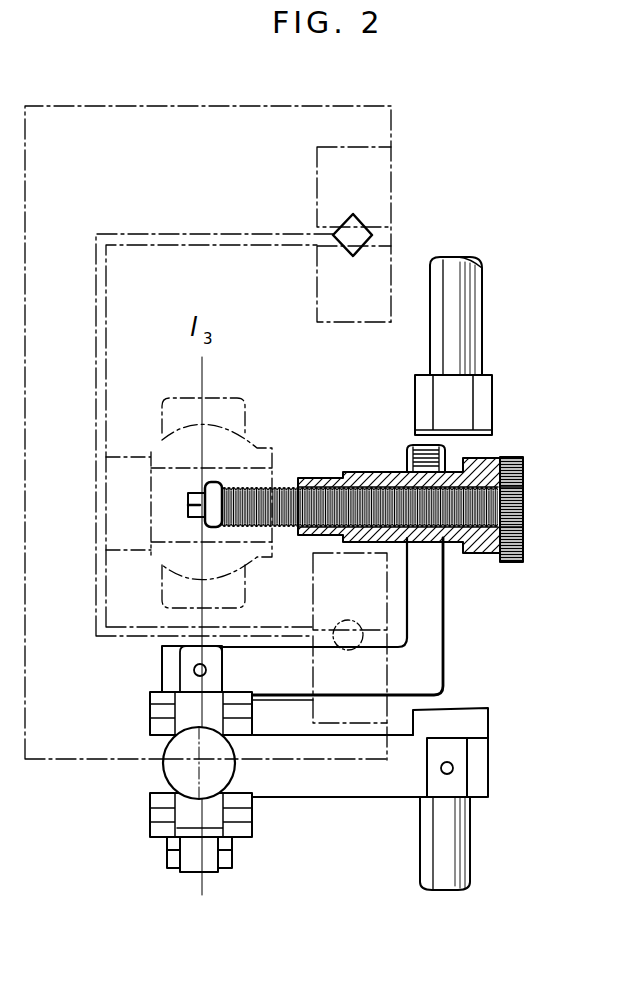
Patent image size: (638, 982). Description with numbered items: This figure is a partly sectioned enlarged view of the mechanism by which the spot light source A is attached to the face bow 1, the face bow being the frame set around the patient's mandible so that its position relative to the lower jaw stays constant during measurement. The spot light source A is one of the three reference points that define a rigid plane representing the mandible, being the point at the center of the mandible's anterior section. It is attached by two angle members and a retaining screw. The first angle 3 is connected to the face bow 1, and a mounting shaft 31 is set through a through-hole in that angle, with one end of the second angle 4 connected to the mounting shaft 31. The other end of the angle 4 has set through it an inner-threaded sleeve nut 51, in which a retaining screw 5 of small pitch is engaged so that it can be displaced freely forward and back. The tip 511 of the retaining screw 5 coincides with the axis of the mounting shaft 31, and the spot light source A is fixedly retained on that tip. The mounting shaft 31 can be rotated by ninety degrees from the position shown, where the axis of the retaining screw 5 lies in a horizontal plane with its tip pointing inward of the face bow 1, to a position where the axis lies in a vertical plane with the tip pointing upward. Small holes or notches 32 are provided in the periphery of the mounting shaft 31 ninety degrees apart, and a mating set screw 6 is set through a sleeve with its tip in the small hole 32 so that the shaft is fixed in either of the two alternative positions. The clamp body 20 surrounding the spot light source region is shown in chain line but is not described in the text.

The face bow 1 is at (468, 322).
The angle member 3 is at (342, 787).
The angle member 4 is at (428, 647).
The retaining screw 5 is at (523, 483).
The sleeve nut 51 is at (368, 480).
The tip of the retaining screw 511 is at (202, 488).
The clamp body 20 is at (156, 565).
The mounting shaft 31 is at (162, 668).
The small hole 32 is at (165, 747).
The set screw 6 is at (178, 772).
The spot light source A is at (188, 503).